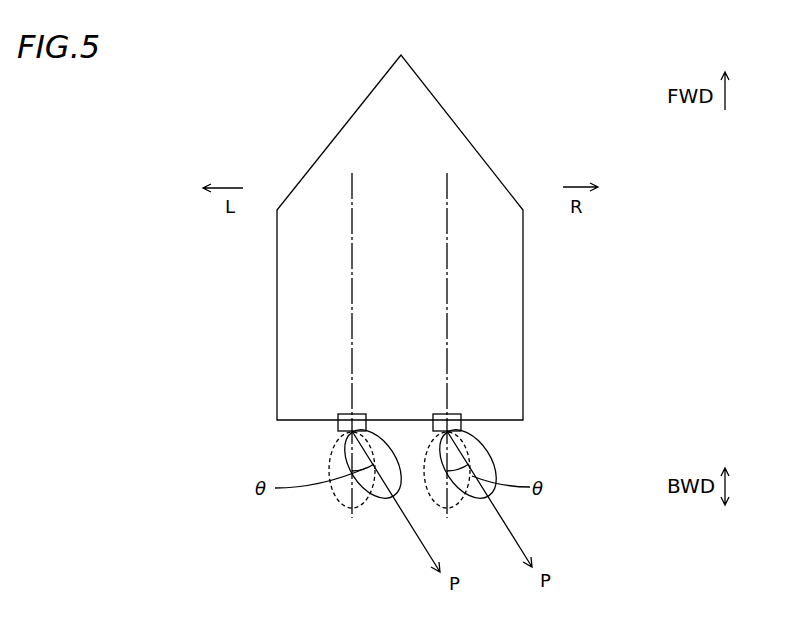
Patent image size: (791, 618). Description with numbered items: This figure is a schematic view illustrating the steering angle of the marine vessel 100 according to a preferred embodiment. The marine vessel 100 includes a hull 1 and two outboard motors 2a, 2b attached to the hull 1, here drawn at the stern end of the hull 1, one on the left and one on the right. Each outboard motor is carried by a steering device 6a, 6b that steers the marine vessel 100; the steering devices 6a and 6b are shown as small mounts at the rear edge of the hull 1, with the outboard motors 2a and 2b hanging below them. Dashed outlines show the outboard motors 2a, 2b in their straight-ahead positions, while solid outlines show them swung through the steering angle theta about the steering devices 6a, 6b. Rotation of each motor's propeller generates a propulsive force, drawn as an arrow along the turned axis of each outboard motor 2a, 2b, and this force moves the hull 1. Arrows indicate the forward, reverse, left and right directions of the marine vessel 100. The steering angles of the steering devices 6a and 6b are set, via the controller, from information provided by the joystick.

The marine vessel 100 is at (445, 237).
The hull 1 is at (512, 252).
The steering device 6a is at (462, 416).
The steering device 6b is at (336, 415).
The outboard motor 2a is at (497, 462).
The outboard motor 2b is at (374, 497).